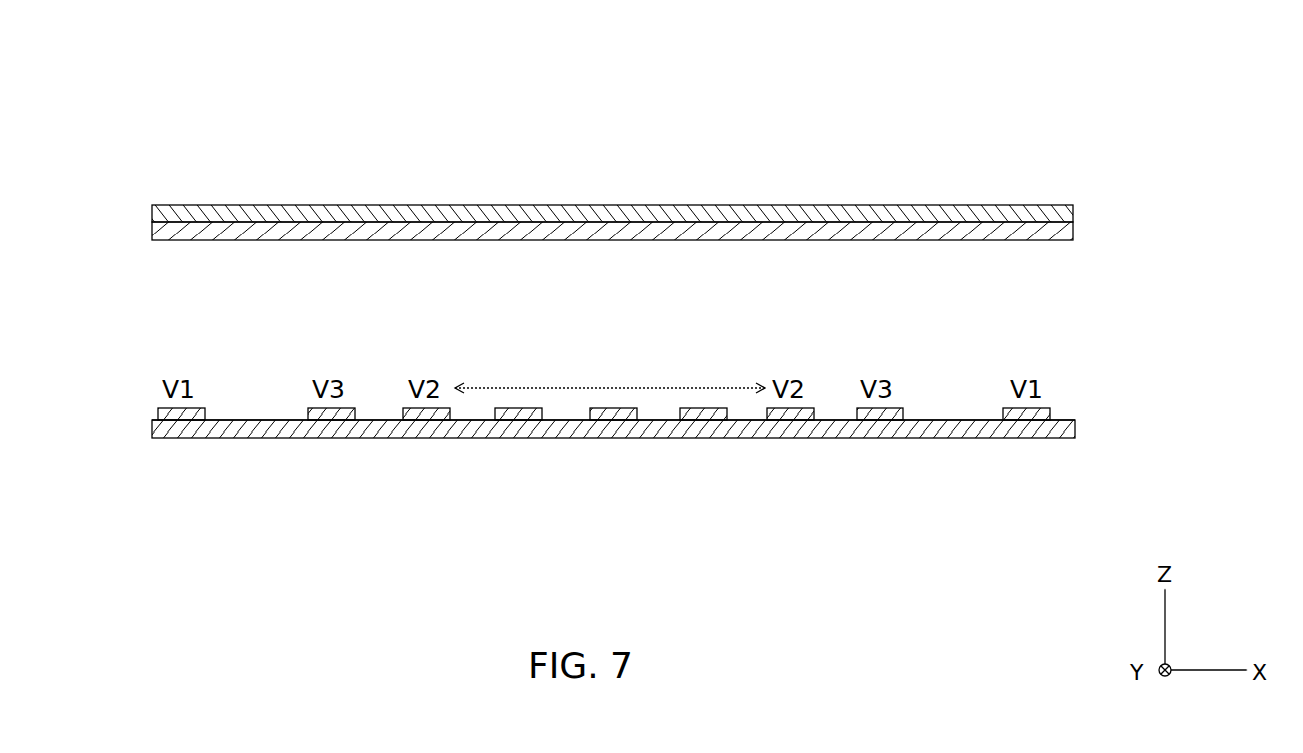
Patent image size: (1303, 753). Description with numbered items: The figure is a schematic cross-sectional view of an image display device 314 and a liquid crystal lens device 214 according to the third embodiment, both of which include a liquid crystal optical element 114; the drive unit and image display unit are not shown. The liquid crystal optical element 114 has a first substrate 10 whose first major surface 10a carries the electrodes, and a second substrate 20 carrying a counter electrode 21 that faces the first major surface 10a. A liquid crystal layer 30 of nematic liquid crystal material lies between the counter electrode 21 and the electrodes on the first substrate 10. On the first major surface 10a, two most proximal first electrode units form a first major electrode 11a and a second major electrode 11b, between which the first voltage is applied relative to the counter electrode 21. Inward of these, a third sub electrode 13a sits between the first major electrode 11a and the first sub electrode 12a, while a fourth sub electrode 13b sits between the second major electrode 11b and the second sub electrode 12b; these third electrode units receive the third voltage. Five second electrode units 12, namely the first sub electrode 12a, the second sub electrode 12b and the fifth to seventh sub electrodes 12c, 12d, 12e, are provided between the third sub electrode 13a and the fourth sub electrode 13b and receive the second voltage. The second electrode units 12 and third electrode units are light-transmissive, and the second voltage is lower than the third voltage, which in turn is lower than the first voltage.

The liquid crystal lens device 214 is at (138, 192).
The image display device 314 is at (857, 110).
The liquid crystal optical element 114 is at (1085, 155).
The second substrate 20 is at (1058, 208).
The counter electrode 21 is at (1062, 232).
The liquid crystal layer 30 is at (1078, 306).
The first substrate 10 is at (1062, 431).
The first major surface 10a is at (953, 420).
The first major electrode 11a is at (181, 420).
The second major electrode 11b is at (1027, 420).
The third sub electrode 13a is at (330, 420).
The fourth sub electrode 13b is at (878, 420).
The first sub electrode 12a is at (427, 420).
The second sub electrode 12b is at (519, 420).
The fifth sub electrode 12c is at (614, 420).
The sixth sub electrode 12d is at (704, 420).
The seventh sub electrode 12e is at (790, 420).
The second electrode units 12 is at (820, 508).